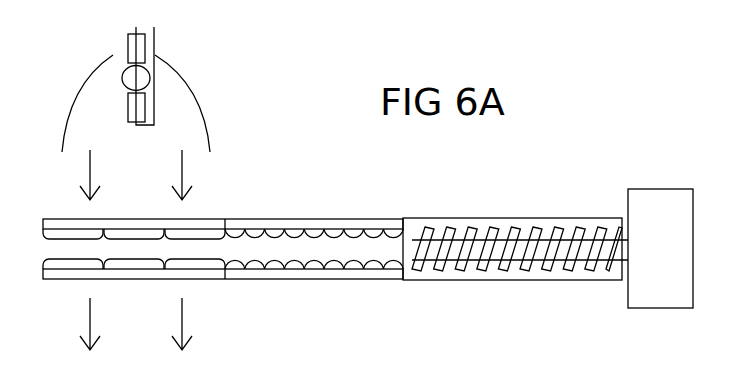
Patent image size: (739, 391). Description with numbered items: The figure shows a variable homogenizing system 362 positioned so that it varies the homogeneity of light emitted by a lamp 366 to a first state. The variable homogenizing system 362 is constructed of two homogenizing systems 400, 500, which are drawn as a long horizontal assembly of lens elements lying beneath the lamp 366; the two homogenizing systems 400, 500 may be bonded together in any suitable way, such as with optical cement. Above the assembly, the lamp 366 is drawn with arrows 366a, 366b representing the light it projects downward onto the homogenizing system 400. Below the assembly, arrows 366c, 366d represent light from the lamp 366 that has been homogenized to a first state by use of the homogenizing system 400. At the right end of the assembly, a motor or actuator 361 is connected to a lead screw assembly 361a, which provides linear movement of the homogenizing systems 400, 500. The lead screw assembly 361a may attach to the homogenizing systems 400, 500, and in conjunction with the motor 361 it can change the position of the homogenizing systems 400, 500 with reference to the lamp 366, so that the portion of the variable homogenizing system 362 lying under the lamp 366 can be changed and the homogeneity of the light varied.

The lamp 366 is at (182, 73).
The arrow 366a is at (83, 175).
The arrow 366b is at (188, 167).
The arrow 366c is at (82, 315).
The arrow 366d is at (188, 313).
The variable homogenizing system 362 is at (290, 185).
The homogenizing system 400 is at (63, 218).
The homogenizing system 500 is at (368, 218).
The lead screw assembly 361a is at (533, 210).
The motor 361 is at (653, 178).